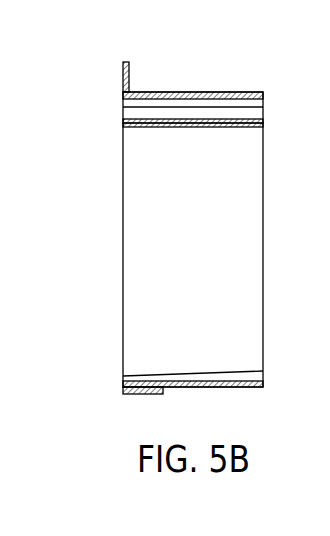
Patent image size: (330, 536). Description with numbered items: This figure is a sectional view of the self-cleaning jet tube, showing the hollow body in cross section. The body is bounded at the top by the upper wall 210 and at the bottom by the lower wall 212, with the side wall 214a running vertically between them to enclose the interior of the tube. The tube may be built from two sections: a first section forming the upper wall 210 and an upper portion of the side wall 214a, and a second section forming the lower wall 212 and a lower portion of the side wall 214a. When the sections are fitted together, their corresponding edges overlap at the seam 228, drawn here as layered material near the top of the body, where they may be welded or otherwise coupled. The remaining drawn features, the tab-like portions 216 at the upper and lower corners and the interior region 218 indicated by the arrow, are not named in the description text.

The upper wall 210 is at (232, 93).
The lower wall 212 is at (230, 387).
The side wall 214a is at (253, 222).
The tab / flange 216 is at (122, 87).
The interior cavity 218 is at (152, 275).
The seam 228 is at (240, 123).